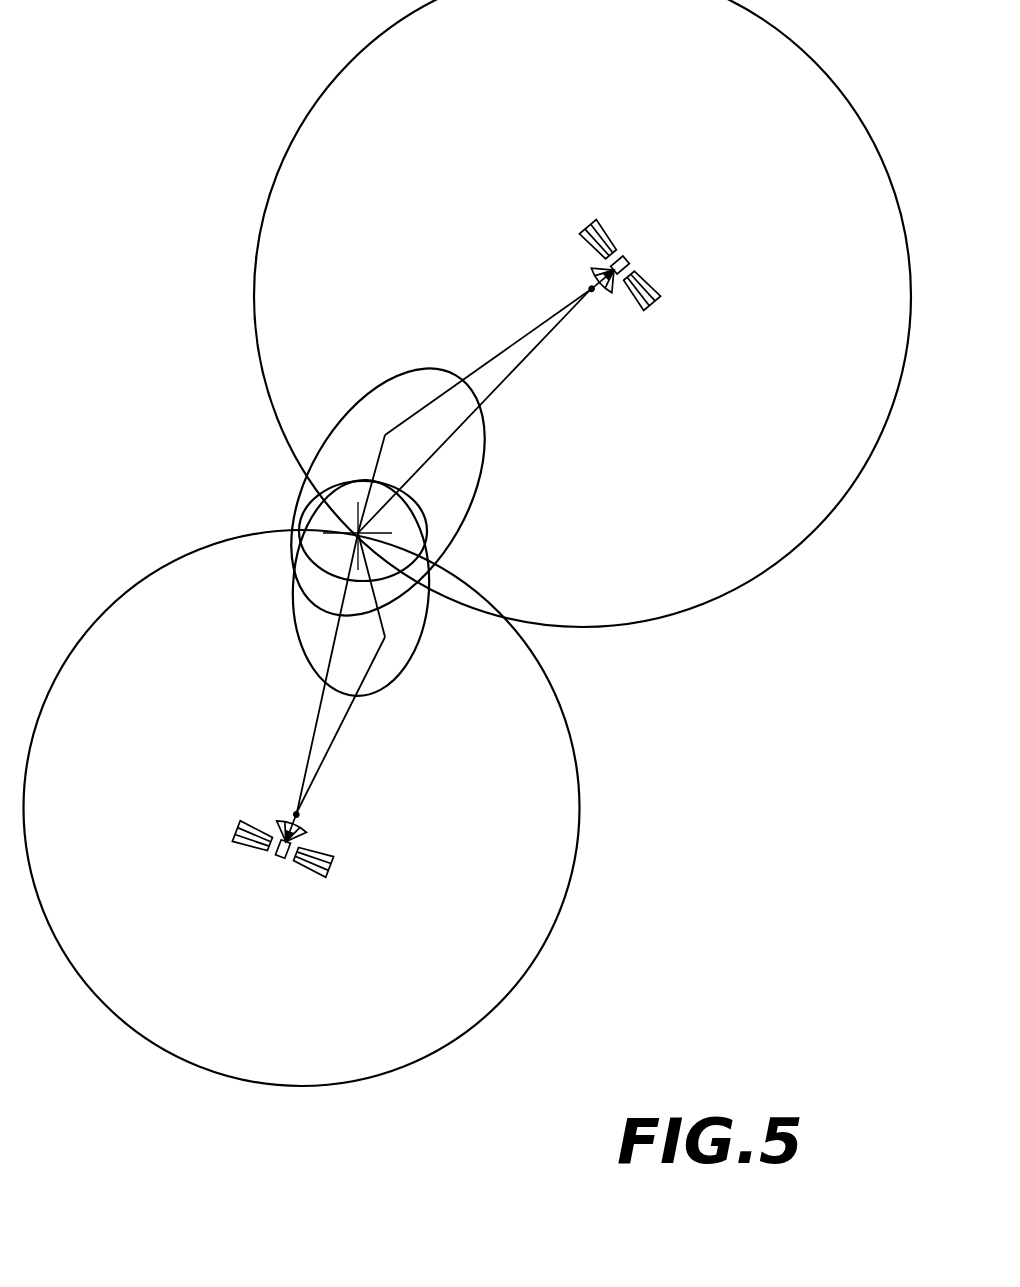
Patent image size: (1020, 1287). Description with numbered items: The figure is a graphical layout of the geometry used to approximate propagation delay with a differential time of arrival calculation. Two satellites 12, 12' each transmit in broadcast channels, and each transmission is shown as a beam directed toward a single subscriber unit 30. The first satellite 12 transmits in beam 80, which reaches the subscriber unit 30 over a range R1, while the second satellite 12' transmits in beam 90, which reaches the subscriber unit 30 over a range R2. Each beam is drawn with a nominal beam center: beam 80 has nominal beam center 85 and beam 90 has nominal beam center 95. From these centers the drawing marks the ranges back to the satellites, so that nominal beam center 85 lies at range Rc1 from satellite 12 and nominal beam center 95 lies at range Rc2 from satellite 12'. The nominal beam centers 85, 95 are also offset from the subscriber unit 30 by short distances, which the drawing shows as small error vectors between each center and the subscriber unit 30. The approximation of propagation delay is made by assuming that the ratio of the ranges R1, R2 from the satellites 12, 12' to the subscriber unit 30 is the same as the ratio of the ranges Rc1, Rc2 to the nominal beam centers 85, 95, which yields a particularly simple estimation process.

The satellite 12 is at (639, 274).
The satellite 12' is at (308, 844).
The subscriber unit 30 is at (303, 508).
The beam 80 is at (419, 367).
The nominal beam center 85 is at (385, 435).
The beam 90 is at (292, 585).
The nominal beam center 95 is at (385, 637).
The range R1 is at (512, 377).
The range Rc1 is at (510, 386).
The range R2 is at (317, 720).
The range Rc2 is at (333, 748).